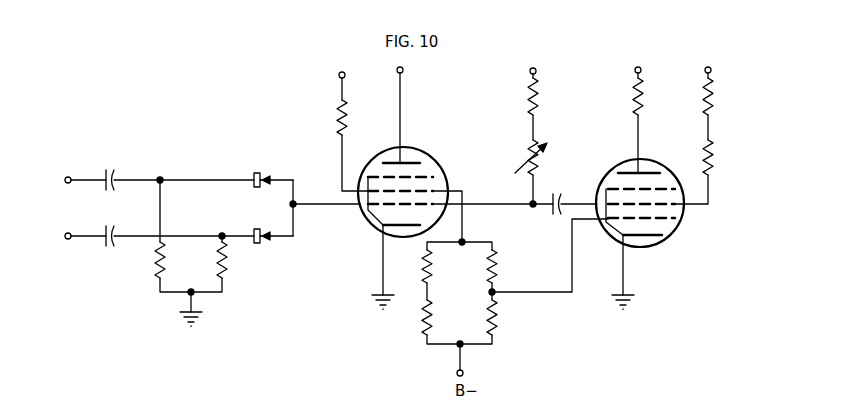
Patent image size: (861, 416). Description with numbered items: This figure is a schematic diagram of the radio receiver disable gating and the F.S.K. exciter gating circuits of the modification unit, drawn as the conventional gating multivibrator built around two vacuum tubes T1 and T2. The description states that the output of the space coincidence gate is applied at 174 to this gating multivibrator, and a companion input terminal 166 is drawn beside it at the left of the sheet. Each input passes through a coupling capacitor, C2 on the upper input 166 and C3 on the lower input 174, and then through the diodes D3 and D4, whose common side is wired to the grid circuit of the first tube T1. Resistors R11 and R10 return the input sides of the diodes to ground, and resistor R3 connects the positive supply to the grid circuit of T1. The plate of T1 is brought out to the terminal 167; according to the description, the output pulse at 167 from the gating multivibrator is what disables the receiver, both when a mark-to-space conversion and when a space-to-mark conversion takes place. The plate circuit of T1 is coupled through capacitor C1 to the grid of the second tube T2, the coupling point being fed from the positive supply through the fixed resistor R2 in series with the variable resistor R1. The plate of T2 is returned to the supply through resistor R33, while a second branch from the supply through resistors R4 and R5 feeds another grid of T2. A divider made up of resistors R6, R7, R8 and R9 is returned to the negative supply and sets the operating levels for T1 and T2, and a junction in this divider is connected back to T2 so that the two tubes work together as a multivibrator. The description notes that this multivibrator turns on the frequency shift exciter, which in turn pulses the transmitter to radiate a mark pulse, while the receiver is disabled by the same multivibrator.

The input terminal 166 is at (67, 178).
The input to gating multivibrator 174 is at (66, 243).
The output pulse point 167 is at (403, 69).
The coupling capacitor .02 uf C2 is at (104, 167).
The coupling capacitor .02 uf C3 is at (97, 252).
The coupling capacitor .047 uf C1 is at (556, 216).
The diode T9G D3 is at (254, 176).
The diode T9G D4 is at (273, 239).
The resistor 1M R11 is at (160, 280).
The resistor 1M R10 is at (223, 280).
The resistor 12K R3 is at (320, 123).
The resistor 330K R2 is at (553, 95).
The variable resistor 1M R1 is at (544, 172).
The resistor 390K R6 is at (439, 276).
The resistor 220K R7 is at (506, 276).
The resistor 560K R8 is at (439, 326).
The resistor 390K R9 is at (506, 326).
The resistor R33 is at (654, 104).
The resistor 820 R4 is at (722, 102).
The resistor 12K R5 is at (722, 166).
The pentode tube 6AS6 T1 is at (388, 228).
The pentode tube 6ASA T2 is at (656, 234).